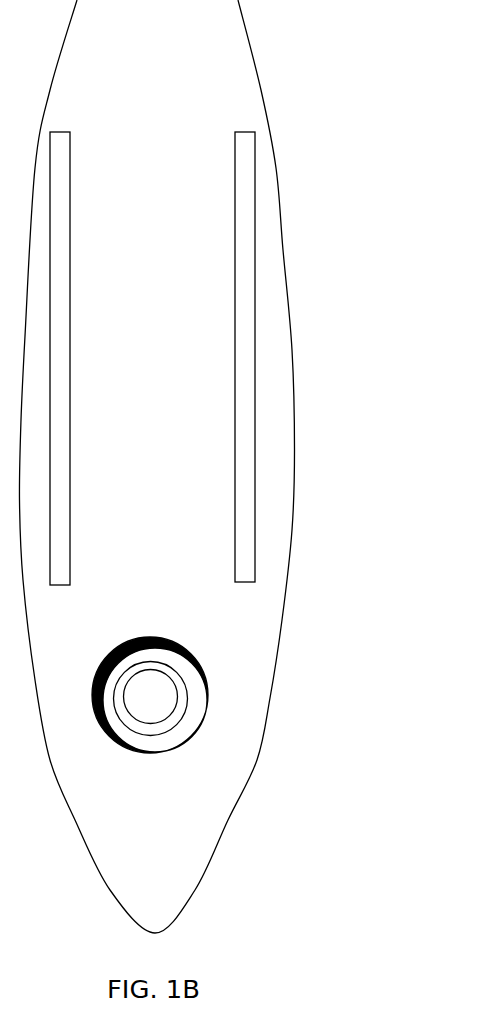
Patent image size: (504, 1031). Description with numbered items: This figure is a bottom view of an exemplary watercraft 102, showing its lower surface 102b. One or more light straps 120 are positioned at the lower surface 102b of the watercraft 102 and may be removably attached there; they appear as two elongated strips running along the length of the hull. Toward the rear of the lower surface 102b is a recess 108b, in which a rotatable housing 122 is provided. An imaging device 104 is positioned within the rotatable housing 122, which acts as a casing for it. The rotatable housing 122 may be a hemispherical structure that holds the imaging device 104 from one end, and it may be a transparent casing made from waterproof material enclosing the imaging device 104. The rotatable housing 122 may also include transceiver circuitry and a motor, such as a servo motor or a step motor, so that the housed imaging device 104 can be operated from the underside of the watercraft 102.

The watercraft 102 is at (261, 90).
The lower surface 102b is at (275, 468).
The light straps 120 is at (70, 302).
The recess 108b is at (182, 645).
The rotatable housing 122 is at (186, 680).
The imaging device 104 is at (170, 712).